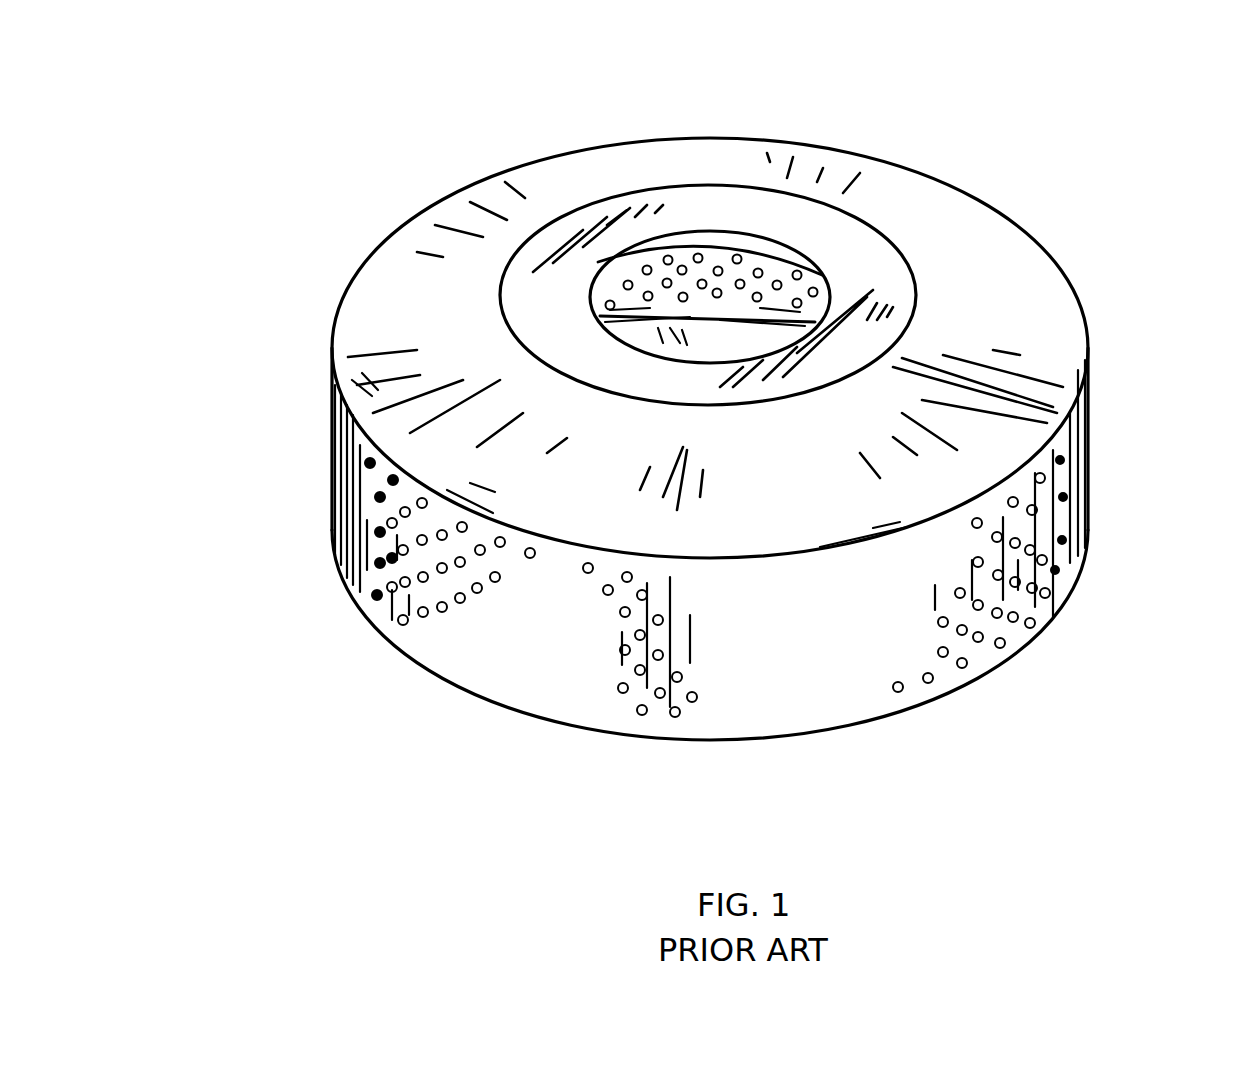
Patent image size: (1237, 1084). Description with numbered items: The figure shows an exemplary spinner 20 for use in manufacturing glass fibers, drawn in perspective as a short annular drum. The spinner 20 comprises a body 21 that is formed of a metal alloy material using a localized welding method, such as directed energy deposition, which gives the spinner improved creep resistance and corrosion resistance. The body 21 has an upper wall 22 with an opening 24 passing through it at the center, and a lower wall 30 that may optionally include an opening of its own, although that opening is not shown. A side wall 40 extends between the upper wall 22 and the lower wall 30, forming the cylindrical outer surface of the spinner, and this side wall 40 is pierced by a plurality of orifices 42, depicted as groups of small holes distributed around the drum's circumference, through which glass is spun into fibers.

The spinner 20 is at (360, 112).
The body 21 is at (951, 188).
The upper wall 22 is at (983, 246).
The opening 24 is at (666, 232).
The lower wall 30 is at (640, 340).
The side wall 40 is at (1091, 425).
The orifices 42 is at (445, 610).